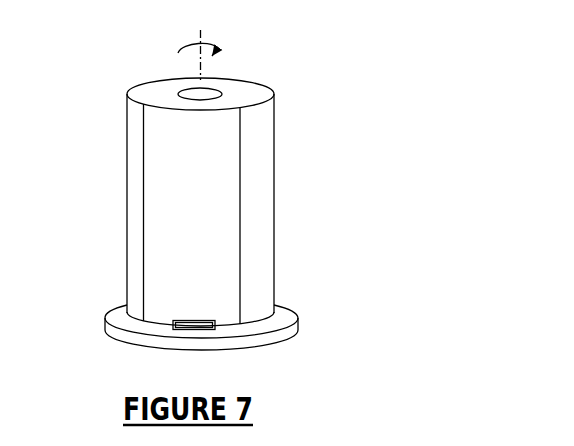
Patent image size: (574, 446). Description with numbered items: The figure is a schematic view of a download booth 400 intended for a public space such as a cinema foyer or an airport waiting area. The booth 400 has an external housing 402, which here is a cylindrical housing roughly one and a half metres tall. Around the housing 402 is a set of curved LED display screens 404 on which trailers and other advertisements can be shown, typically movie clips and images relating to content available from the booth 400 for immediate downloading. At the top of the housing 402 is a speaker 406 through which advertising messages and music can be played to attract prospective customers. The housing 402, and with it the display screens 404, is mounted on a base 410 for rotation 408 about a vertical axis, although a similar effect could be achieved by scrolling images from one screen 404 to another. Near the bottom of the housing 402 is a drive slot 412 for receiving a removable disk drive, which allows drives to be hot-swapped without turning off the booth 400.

The download booth 400 is at (286, 226).
The external housing 402 is at (127, 233).
The curved LED display screens 404 is at (133, 156).
The speaker 406 is at (192, 92).
The rotation 408 is at (219, 55).
The base 410 is at (107, 318).
The drive slot 412 is at (197, 327).